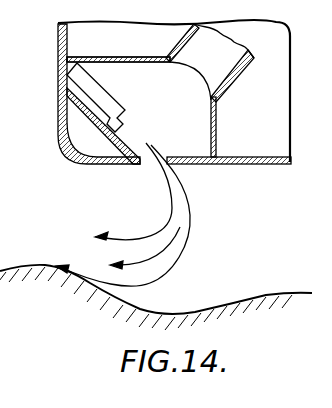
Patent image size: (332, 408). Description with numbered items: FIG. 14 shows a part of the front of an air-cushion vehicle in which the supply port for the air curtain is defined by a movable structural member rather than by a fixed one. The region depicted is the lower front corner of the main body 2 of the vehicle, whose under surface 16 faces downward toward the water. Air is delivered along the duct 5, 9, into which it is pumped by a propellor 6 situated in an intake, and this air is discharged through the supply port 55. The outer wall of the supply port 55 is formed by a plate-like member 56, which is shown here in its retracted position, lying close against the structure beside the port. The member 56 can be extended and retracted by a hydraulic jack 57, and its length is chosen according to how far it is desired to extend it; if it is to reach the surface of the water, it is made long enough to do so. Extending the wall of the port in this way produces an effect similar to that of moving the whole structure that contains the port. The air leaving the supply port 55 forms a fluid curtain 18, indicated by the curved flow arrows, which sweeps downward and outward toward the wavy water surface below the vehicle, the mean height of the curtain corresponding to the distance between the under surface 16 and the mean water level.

The main body 2 is at (60, 40).
The duct 5 is at (139, 62).
The duct 9 is at (118, 59).
The propellor 6 is at (238, 62).
The hydraulic jack 57 is at (102, 95).
The plate-like member 56 is at (84, 112).
The under surface 16 is at (256, 165).
The supply port 55 is at (147, 165).
The fluid curtain 18 is at (97, 261).